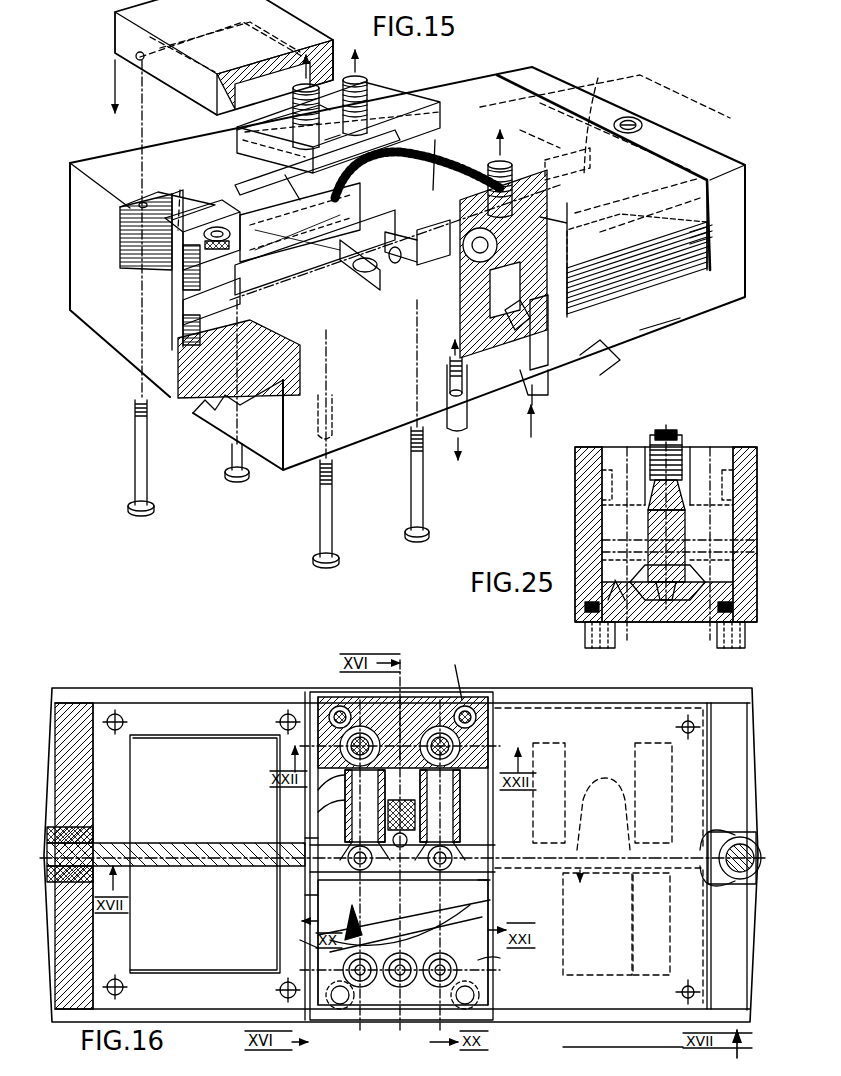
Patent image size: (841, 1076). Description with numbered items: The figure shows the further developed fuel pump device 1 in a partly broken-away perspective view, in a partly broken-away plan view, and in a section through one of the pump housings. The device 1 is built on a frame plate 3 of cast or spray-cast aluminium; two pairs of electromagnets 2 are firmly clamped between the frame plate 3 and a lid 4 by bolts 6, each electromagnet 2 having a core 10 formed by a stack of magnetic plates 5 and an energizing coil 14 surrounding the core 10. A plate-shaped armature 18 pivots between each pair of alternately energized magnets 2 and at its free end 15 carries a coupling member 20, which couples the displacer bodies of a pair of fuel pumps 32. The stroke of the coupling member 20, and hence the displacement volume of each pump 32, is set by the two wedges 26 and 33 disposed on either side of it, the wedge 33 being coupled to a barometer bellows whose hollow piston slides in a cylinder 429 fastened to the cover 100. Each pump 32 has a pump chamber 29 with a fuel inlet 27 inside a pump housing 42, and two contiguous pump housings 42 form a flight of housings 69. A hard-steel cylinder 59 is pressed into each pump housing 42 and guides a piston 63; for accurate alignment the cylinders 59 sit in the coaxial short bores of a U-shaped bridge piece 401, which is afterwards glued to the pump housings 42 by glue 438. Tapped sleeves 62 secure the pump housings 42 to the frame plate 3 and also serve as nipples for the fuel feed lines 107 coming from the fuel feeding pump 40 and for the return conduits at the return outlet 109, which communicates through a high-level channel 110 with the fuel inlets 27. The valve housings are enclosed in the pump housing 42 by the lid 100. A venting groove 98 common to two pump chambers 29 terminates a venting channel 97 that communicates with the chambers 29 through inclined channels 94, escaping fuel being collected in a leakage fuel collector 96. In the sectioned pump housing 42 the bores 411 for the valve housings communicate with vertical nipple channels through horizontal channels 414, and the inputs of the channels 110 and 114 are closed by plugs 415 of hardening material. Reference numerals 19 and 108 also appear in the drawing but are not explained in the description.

In FIG. 15, the device 1 is at (554, 45).
In FIG. 16, the device 1 is at (120, 672).
In FIG. 15, the electromagnets 2 is at (187, 163).
In FIG. 15, the frame plate 3 is at (633, 327).
In FIG. 16, the frame plate 3 is at (203, 686).
In FIG. 15, the lid 4 is at (214, 10).
In FIG. 16, the lid 4 is at (640, 720).
In FIG. 15, the magnetic plates 5 is at (120, 247).
In FIG. 15, the bolts 6 is at (136, 468).
In FIG. 15, the core 10 is at (654, 290).
In FIG. 16, the core 10 is at (614, 793).
In FIG. 15, the energizing coil 14 is at (178, 190).
In FIG. 15, the free end 15 is at (339, 208).
In FIG. 16, the free end 15 is at (330, 882).
In FIG. 15, the armature 18 is at (292, 256).
In FIG. 16, the armature 18 is at (214, 846).
In FIG. 15, the coupling block 19 is at (395, 255).
In FIG. 16, the coupling member 20 is at (341, 843).
In FIG. 16, the wedge 26 is at (400, 800).
In FIG. 15, the fuel inlet 27 is at (511, 330).
In FIG. 25, the fuel inlet 27 is at (583, 605).
In FIG. 15, the pump chamber 29 is at (491, 244).
In FIG. 15, the fuel pump 32 is at (240, 148).
In FIG. 25, the fuel pump 32 is at (575, 558).
In FIG. 16, the fuel pump 32 is at (313, 693).
In FIG. 15, the wedge 33 is at (388, 185).
In FIG. 16, the wedge 33 is at (405, 915).
In FIG. 15, the fuel feeding pump 40 is at (336, 147).
In FIG. 15, the pump housing 42 is at (288, 196).
In FIG. 25, the pump housing 42 is at (576, 492).
In FIG. 16, the pump housing 42 is at (320, 727).
In FIG. 15, the hard-steel cylinder 59 is at (474, 190).
In FIG. 15, the tapped sleeves 62 is at (535, 350).
In FIG. 16, the piston 63 is at (318, 813).
In FIG. 15, the flight of housings 69 is at (250, 170).
In FIG. 25, the inclined channels 94 is at (648, 508).
In FIG. 15, the leakage fuel collector 96 is at (447, 345).
In FIG. 25, the venting channel 97 is at (682, 482).
In FIG. 15, the venting groove 98 is at (320, 118).
In FIG. 25, the venting groove 98 is at (678, 432).
In FIG. 16, the venting groove 98 is at (410, 990).
In FIG. 15, the lid 100 is at (281, 127).
In FIG. 16, the lid 100 is at (470, 908).
In FIG. 15, the fuel feed lines 107 is at (550, 408).
In FIG. 25, the fuel feed lines 107 is at (585, 633).
In FIG. 15, the direction arrow 108 is at (462, 452).
In FIG. 15, the return outlet 109 is at (468, 418).
In FIG. 25, the return outlet 109 is at (727, 630).
In FIG. 25, the high-level channel 110 is at (670, 600).
In FIG. 16, the high-level channel 110 is at (386, 803).
In FIG. 16, the channel 114 is at (385, 990).
In FIG. 16, the U-shaped bridge piece 401 is at (302, 837).
In FIG. 25, the bores for valve housings 411 is at (580, 515).
In FIG. 25, the horizontal channels 414 is at (636, 600).
In FIG. 16, the horizontal channels 414 is at (413, 705).
In FIG. 25, the plugs 415 is at (725, 576).
In FIG. 16, the plugs 415 is at (341, 698).
In FIG. 16, the cylinder 429 is at (504, 957).
In FIG. 16, the glue 438 is at (318, 792).